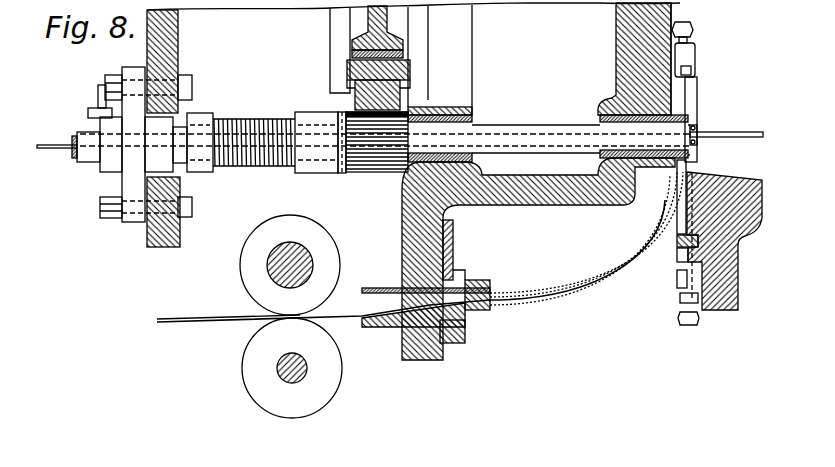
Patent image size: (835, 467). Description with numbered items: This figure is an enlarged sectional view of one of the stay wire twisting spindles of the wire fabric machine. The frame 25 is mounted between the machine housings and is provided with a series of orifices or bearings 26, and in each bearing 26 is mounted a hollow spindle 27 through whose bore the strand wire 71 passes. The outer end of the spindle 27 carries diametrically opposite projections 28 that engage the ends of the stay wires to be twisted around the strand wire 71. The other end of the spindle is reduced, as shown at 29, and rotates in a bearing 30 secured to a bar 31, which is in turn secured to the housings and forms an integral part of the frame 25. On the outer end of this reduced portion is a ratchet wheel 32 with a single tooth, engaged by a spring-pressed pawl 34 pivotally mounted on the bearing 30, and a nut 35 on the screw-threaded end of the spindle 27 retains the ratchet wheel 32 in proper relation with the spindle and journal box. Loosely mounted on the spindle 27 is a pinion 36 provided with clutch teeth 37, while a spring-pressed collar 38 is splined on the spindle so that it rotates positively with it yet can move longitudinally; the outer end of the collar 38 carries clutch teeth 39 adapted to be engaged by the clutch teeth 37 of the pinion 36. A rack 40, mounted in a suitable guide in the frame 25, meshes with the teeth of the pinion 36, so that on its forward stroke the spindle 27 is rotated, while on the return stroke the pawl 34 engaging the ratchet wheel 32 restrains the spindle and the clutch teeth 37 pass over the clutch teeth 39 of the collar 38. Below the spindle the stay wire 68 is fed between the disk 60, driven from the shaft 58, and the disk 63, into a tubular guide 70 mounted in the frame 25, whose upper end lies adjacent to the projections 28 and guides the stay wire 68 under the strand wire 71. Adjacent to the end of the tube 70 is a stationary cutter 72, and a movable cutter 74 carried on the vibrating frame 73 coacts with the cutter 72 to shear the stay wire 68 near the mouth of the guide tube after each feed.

The frame 25 is at (413, 181).
The bearings 26 is at (472, 116).
The hollow spindle 27 is at (527, 122).
The diametrically opposite projections 28 is at (698, 137).
The reduced portion of the spindle 29 is at (176, 178).
The bearing 30 is at (133, 165).
The bar 31 is at (180, 236).
The ratchet wheel 32 is at (108, 167).
The spring-pressed pawl 34 is at (92, 112).
The nut 35 is at (78, 158).
The pinion 36 is at (382, 152).
The clutch teeth 37 is at (345, 130).
The spring-pressed collar 38 is at (310, 168).
The clutch teeth 39 is at (341, 142).
The rack 40 is at (358, 88).
The shaft 58 is at (275, 262).
The disk 60 is at (322, 251).
The disk 63 is at (325, 389).
The stay wire 68 is at (196, 320).
The tubular guide 70 is at (565, 291).
The strand wire 71 is at (49, 145).
The stationary cutter 72 is at (697, 95).
The vibrating frame 73 is at (722, 258).
The movable cutter 74 is at (688, 163).